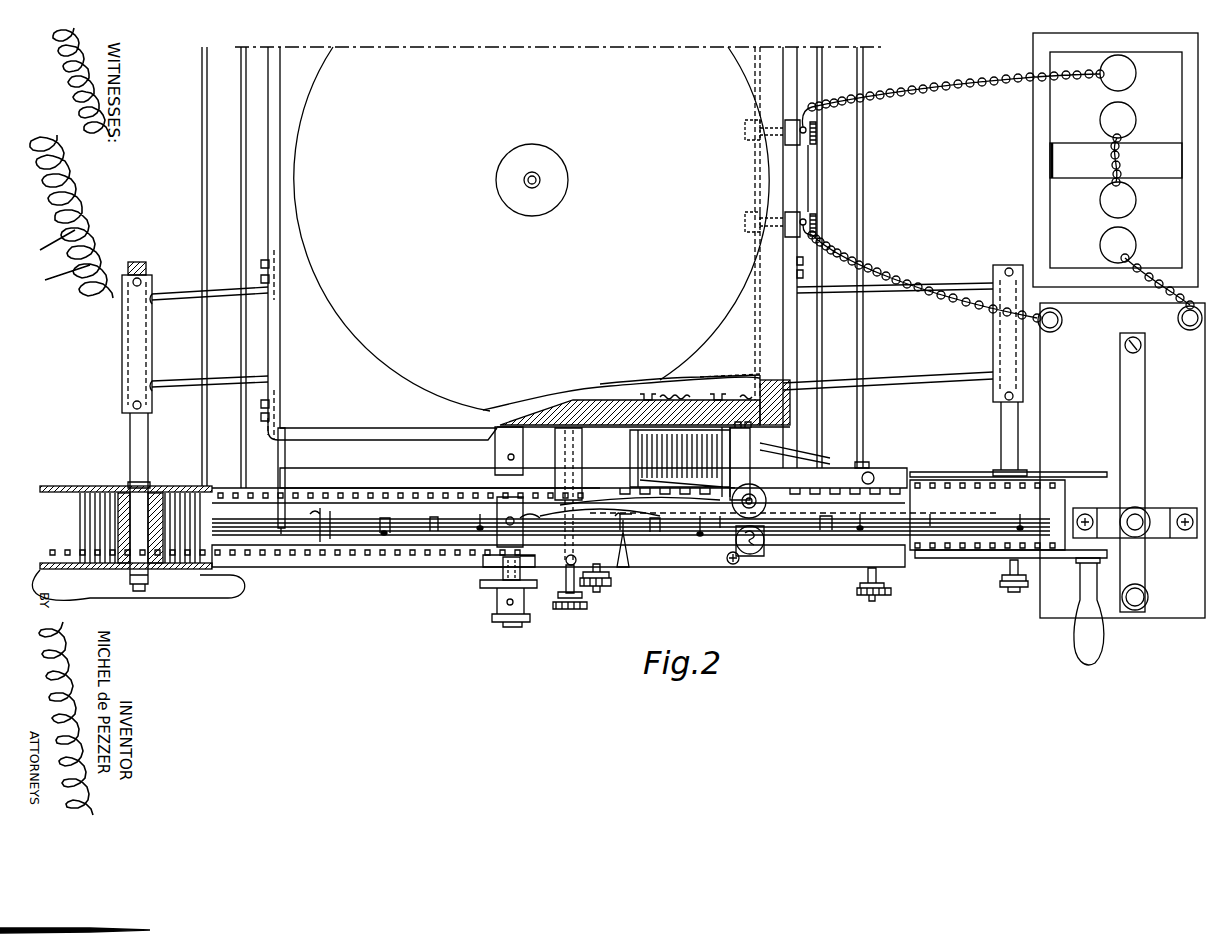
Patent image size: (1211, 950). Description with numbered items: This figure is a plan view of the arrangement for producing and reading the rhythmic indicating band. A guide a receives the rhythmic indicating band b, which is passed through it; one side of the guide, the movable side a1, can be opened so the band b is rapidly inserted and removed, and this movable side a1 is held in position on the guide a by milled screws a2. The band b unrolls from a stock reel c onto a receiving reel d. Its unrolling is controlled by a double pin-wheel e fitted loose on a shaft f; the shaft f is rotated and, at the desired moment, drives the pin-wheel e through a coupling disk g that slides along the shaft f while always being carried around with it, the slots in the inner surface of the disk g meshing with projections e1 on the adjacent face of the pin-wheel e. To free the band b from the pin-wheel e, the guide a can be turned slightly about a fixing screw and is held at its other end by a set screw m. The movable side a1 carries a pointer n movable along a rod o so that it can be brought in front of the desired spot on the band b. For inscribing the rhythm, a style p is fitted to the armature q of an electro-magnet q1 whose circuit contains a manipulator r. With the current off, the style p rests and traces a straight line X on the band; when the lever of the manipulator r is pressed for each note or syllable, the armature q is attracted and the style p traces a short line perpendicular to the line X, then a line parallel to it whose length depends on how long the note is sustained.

The guide a is at (593, 480).
The movable side of the guide a1 is at (818, 568).
The milled screws a2 is at (598, 590).
The rhythmic indicating band b is at (80, 522).
The stock reel c is at (982, 559).
The receiving reel d is at (92, 572).
The double pin-wheel e is at (506, 492).
The projections e1 is at (532, 561).
The shaft f is at (522, 468).
The coupling disk g is at (494, 588).
The set screw m is at (568, 610).
The pointer n is at (629, 568).
The rod o is at (728, 563).
The style p is at (768, 504).
The armature q is at (744, 474).
The electro-magnet q1 is at (640, 448).
The manipulator r is at (1136, 612).
The line X— X is at (246, 490).